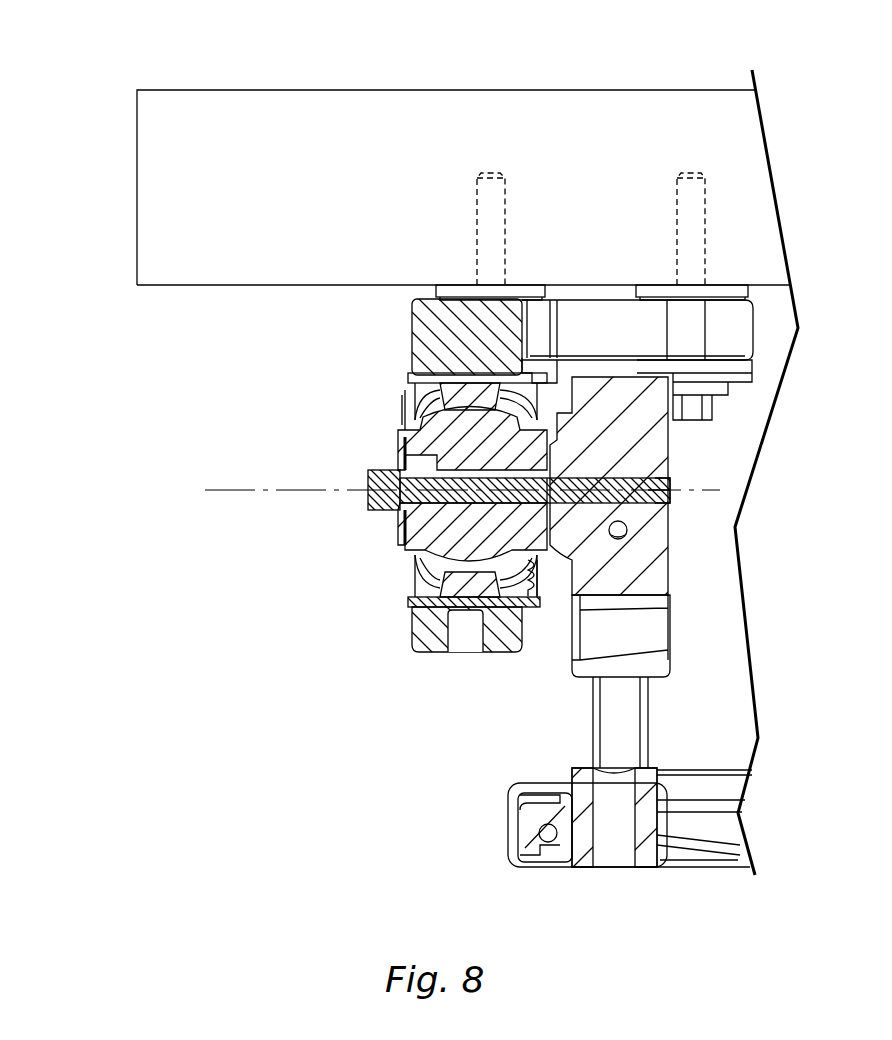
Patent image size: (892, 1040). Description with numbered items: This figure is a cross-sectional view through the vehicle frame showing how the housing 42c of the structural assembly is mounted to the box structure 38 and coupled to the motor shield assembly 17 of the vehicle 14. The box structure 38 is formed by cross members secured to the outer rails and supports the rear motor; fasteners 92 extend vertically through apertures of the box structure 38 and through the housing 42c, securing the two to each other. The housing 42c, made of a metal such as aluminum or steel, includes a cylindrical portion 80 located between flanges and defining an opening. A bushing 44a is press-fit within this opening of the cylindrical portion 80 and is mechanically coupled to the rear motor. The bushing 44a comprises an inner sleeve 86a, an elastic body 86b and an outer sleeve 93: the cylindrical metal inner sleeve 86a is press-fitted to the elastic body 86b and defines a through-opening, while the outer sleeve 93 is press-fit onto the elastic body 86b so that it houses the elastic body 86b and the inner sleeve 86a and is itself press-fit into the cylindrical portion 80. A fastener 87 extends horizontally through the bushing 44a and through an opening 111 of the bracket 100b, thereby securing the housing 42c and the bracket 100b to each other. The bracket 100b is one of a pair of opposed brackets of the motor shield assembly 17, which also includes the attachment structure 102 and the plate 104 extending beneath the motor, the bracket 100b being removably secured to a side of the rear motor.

The steering assembly 14 is at (100, 232).
The motor shield assembly 17 is at (718, 886).
The box structure 38 is at (130, 298).
The fasteners 92 is at (495, 193).
The housing 42c is at (451, 341).
The bushing 44a is at (456, 440).
The fastener 87 is at (366, 480).
The inner sleeve 86a is at (456, 525).
The elastic body 86b is at (456, 586).
The outer sleeve 93 is at (456, 602).
The cylindrical portion 80 is at (436, 628).
The opening 111 is at (658, 490).
The bracket 100b is at (566, 640).
The attachment structure 102 is at (591, 720).
The plate 104 is at (724, 788).